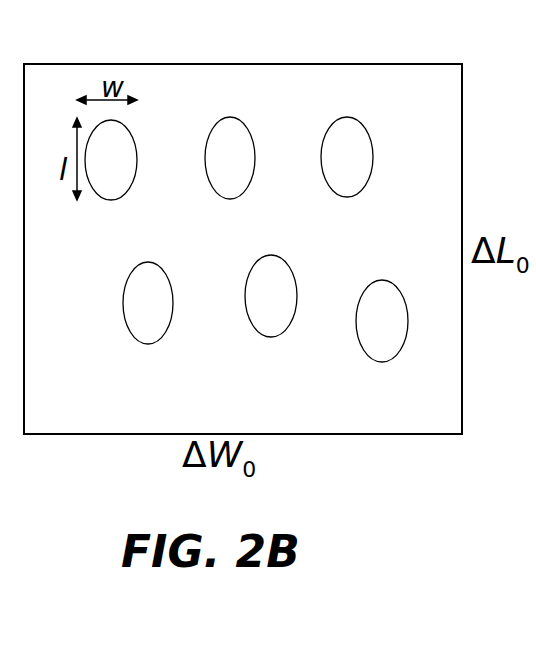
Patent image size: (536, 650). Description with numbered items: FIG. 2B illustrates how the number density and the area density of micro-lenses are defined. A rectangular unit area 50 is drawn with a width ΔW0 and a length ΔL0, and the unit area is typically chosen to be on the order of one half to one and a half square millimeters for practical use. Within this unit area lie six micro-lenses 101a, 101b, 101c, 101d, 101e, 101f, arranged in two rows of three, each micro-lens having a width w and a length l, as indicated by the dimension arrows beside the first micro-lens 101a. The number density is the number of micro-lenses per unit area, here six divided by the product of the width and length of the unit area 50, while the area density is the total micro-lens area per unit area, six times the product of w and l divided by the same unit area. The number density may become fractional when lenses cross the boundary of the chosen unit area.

The substrate / sheet 50 is at (218, 80).
The micro-lens 101a is at (85, 150).
The micro-lens 101b is at (230, 125).
The micro-lens 101c is at (348, 122).
The micro-lens 101d is at (135, 312).
The micro-lens 101e is at (258, 275).
The micro-lens 101f is at (380, 288).